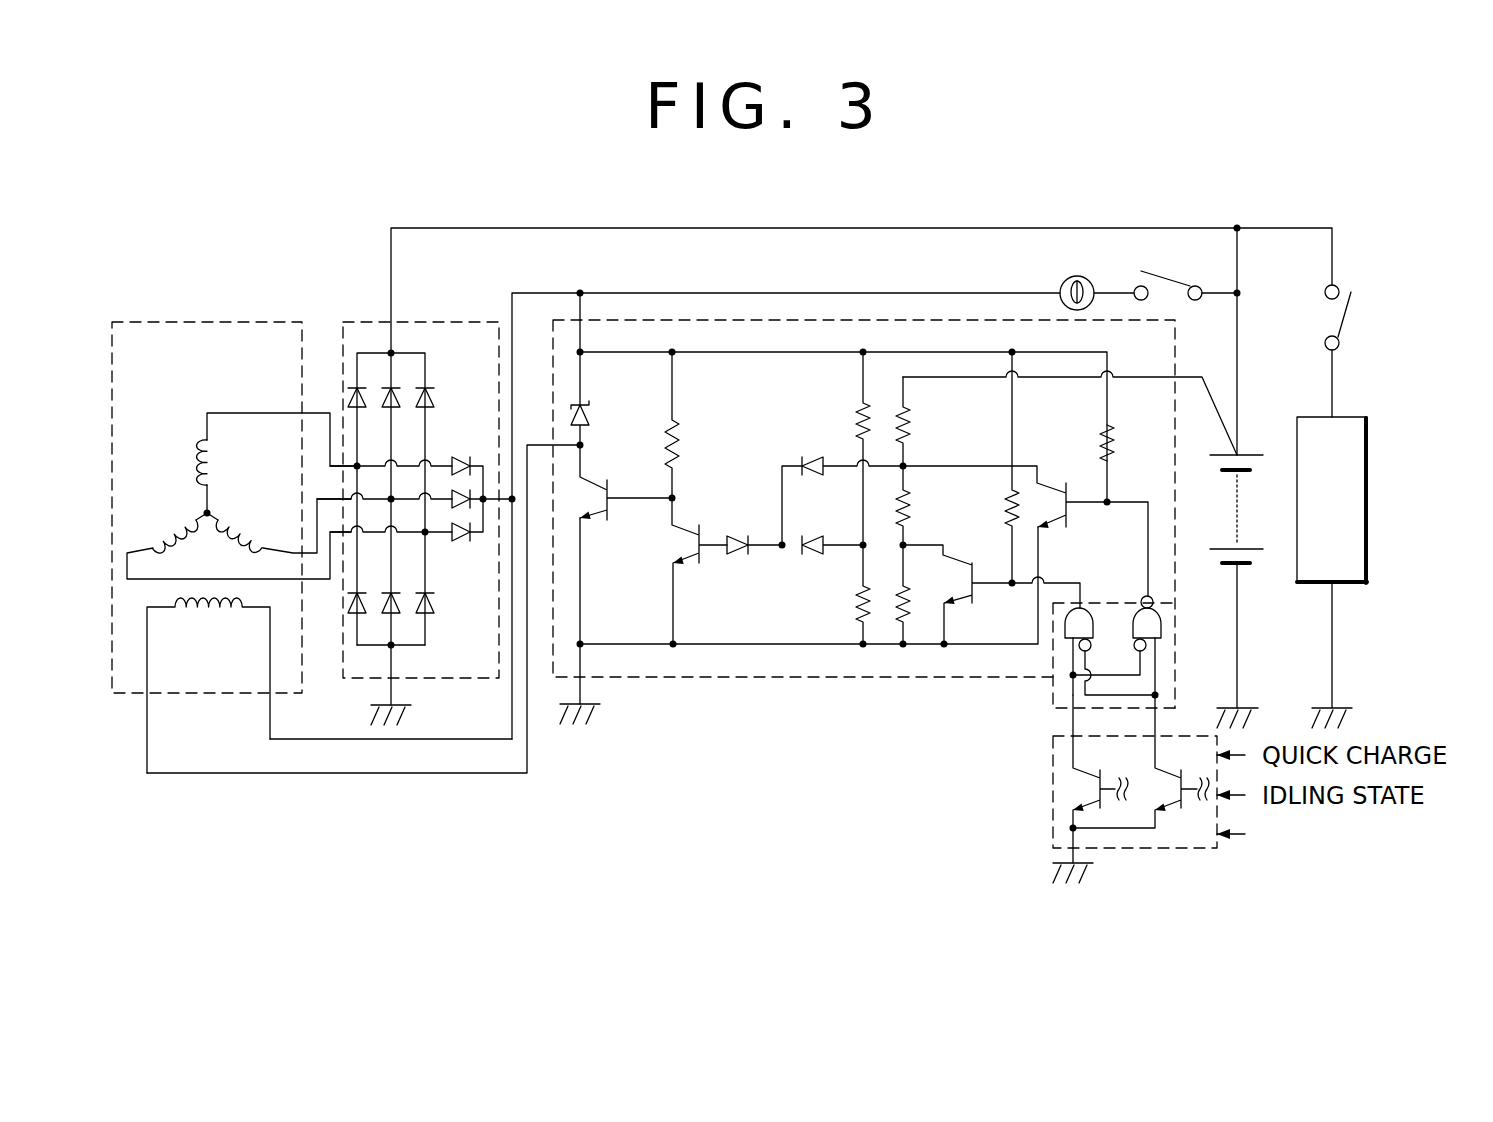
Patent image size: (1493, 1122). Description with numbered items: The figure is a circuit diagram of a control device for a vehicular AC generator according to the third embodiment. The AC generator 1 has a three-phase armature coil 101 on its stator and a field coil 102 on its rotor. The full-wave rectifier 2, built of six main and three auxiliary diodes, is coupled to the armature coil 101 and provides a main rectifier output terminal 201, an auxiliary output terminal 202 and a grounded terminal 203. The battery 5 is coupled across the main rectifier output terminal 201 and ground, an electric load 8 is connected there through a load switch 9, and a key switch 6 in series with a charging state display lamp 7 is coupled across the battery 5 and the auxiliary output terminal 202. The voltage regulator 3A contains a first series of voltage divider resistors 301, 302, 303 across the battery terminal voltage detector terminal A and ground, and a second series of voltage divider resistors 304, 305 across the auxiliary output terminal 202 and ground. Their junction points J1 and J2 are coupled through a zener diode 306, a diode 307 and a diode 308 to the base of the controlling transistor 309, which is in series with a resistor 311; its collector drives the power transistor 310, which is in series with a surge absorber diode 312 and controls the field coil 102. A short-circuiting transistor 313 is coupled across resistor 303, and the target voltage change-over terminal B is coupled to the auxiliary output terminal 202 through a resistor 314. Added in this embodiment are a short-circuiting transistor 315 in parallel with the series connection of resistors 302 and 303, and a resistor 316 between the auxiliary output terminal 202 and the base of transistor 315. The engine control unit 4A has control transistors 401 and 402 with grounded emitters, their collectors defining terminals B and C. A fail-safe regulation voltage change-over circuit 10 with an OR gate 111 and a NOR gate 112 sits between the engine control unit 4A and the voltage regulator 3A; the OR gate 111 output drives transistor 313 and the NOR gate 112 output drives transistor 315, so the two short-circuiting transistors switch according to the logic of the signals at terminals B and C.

The AC generator 1 is at (213, 322).
The full-wave rectifier 2 is at (430, 322).
The voltage regulator 3A is at (733, 677).
The engine control unit 4A is at (1050, 808).
The battery 5 is at (1232, 490).
The key switch 6 is at (1178, 280).
The charging state display lamp 7 is at (1065, 278).
The electric load 8 is at (1367, 548).
The load switch 9 is at (1345, 318).
The fail-safe regulation voltage change-over circuit 10 is at (1053, 698).
The three-phase armature coil 101 is at (203, 458).
The field coil 102 is at (210, 612).
The OR gate 111 is at (1092, 620).
The NOR gate 112 is at (1161, 625).
The main rectifier output terminal 201 is at (392, 353).
The auxiliary output terminal 202 is at (487, 502).
The grounded terminal 203 is at (392, 645).
The voltage divider resistor 301 is at (912, 412).
The voltage divider resistor 302 is at (912, 505).
The voltage divider resistor 303 is at (905, 600).
The voltage divider resistor 304 is at (858, 415).
The voltage divider resistor 305 is at (858, 600).
The zener diode 306 is at (738, 535).
The diode 307 is at (810, 460).
The diode 308 is at (806, 540).
The controlling transistor 309 is at (683, 565).
The power transistor 310 is at (590, 522).
The resistor 311 is at (678, 440).
The surge absorber diode 312 is at (584, 410).
The short-circuiting transistor 313 is at (950, 600).
The resistor 314 is at (1007, 505).
The short-circuiting transistor 315 is at (1055, 520).
The resistor 316 is at (1100, 440).
The control transistor 401 is at (1106, 789).
The control transistor 402 is at (1170, 813).
The battery terminal voltage detector terminal A is at (1195, 377).
The target voltage change-over terminal B is at (1073, 729).
The target voltage change-over terminal C is at (1155, 723).
The junction point J1 is at (905, 463).
The junction point J2 is at (861, 548).